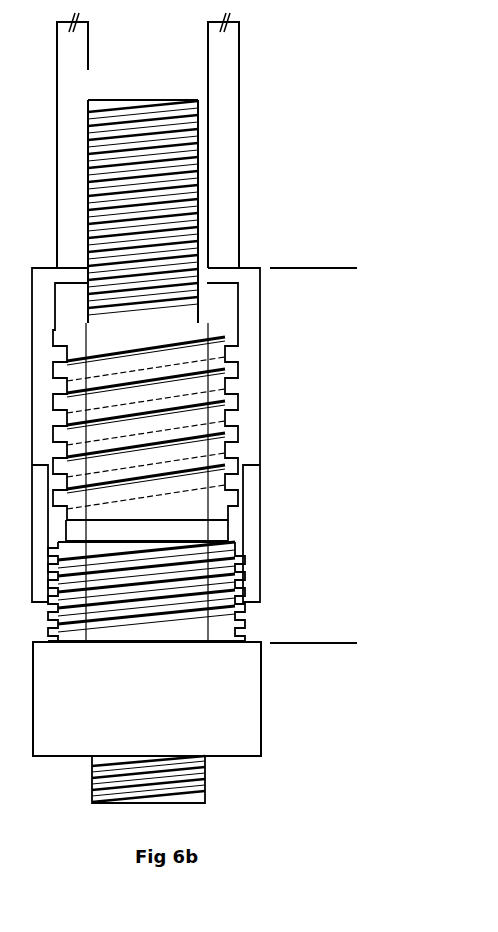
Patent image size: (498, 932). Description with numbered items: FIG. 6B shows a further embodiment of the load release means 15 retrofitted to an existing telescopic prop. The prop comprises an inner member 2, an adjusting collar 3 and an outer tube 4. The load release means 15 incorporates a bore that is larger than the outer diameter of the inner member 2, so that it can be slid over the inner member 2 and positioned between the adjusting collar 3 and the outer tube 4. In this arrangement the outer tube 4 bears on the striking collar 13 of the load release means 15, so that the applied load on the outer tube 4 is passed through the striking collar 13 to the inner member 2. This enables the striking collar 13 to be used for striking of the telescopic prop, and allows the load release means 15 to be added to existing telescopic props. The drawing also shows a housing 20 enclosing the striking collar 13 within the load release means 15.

The inner member 2 is at (212, 783).
The adjusting collar 3 is at (263, 665).
The outer tube 4 is at (238, 133).
The striking collar 13 is at (248, 385).
The load release means 15 is at (320, 268).
The housing / sleeve 20 is at (257, 533).